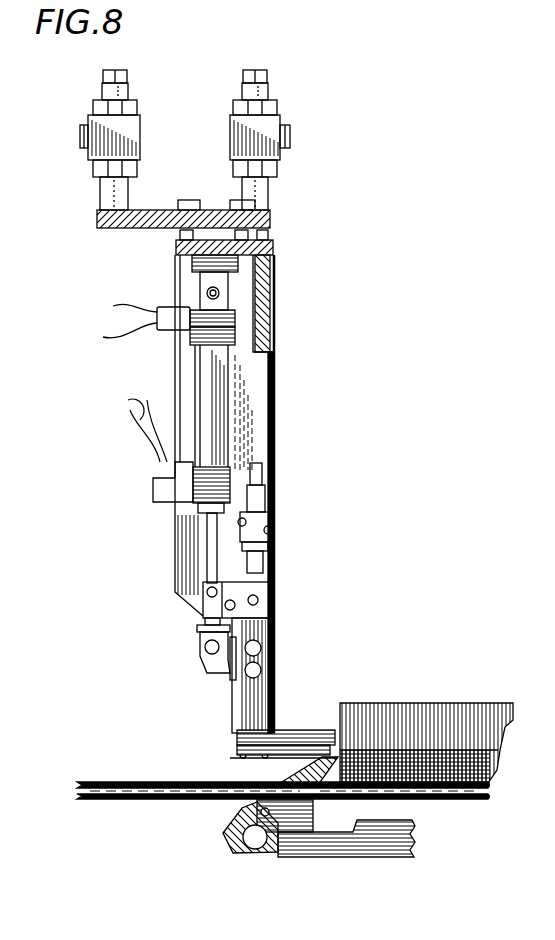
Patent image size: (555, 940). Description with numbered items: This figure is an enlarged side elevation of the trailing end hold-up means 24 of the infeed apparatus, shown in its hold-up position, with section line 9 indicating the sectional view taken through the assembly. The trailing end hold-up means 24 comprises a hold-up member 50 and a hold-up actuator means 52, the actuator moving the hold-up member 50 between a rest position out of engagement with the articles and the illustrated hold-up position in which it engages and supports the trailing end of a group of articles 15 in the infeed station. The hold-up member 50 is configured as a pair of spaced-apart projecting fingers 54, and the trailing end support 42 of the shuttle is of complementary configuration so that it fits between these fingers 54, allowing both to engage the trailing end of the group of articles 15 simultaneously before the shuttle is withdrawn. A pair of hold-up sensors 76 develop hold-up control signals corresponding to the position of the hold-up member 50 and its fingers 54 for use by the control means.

The section line 9- 9 is at (278, 30).
The trailing end hold-up means 24 is at (313, 253).
The hold-up actuator means 52 is at (175, 539).
The hold-up sensors 76 is at (258, 495).
The hold-up member 50 is at (238, 705).
The projecting fingers 54 is at (293, 733).
The group of articles 15 is at (410, 703).
The trailing end support 42 is at (250, 805).